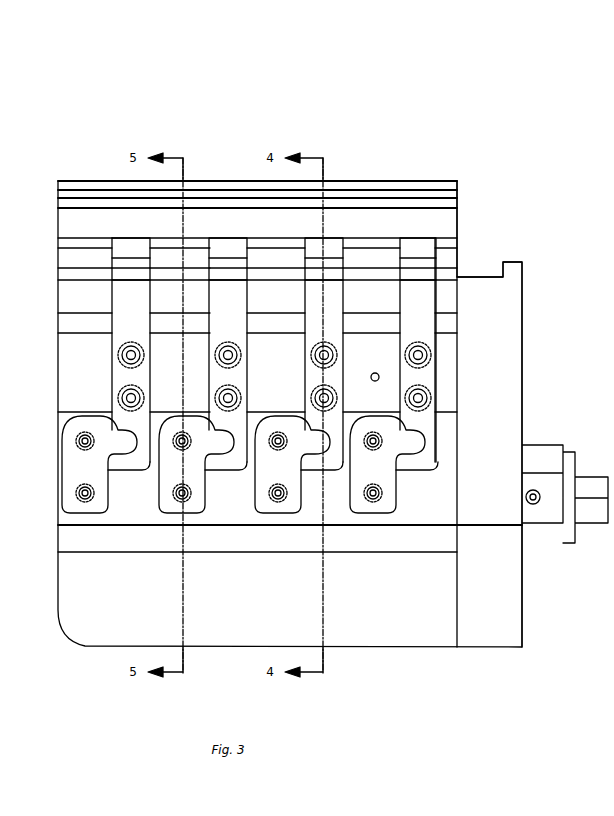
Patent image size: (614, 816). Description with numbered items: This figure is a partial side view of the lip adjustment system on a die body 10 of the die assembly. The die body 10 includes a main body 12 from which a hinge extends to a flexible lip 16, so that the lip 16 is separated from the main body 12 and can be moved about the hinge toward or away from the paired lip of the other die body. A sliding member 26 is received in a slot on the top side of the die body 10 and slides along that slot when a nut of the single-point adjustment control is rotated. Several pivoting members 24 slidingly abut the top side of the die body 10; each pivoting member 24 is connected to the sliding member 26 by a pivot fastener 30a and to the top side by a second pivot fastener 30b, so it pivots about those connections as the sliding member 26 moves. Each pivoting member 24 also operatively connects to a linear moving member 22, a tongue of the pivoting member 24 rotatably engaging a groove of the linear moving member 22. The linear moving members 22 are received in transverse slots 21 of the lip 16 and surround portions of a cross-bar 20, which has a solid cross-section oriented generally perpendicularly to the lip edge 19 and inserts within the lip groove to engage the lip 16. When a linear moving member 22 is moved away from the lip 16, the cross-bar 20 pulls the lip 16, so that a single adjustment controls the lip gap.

The die body 10 is at (475, 152).
The main body 12 is at (423, 623).
The flexible lip 16 is at (442, 183).
The lip edge 19 is at (83, 292).
The cross-bar 20 is at (368, 255).
The transverse slot 21 is at (264, 238).
The linear moving member 22 is at (123, 240).
The pivoting member 24 is at (73, 507).
The sliding member 26 is at (430, 345).
The pivot fastener 30a is at (375, 500).
The second pivot fastener 30b is at (378, 450).